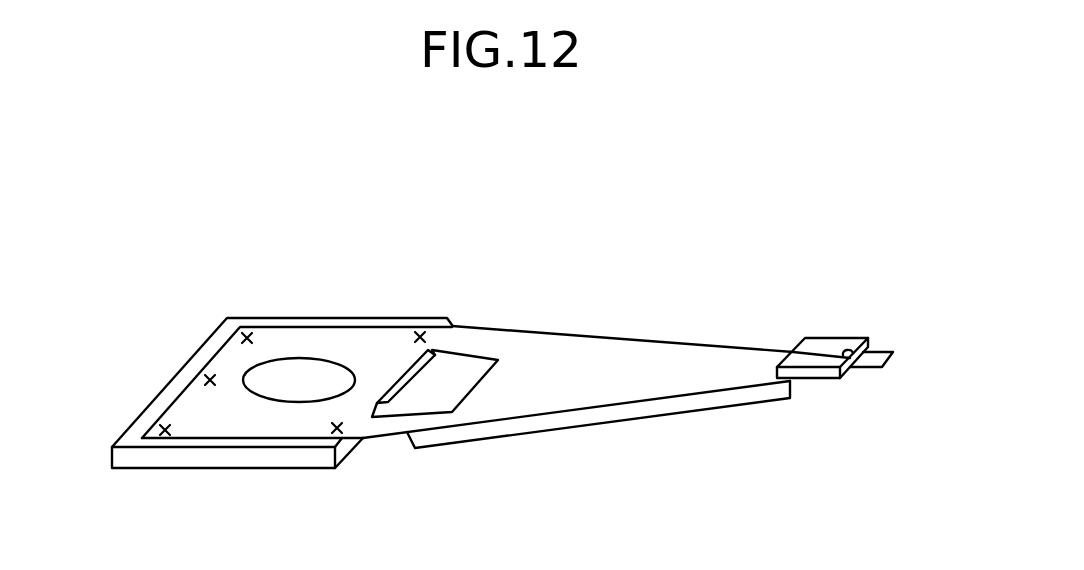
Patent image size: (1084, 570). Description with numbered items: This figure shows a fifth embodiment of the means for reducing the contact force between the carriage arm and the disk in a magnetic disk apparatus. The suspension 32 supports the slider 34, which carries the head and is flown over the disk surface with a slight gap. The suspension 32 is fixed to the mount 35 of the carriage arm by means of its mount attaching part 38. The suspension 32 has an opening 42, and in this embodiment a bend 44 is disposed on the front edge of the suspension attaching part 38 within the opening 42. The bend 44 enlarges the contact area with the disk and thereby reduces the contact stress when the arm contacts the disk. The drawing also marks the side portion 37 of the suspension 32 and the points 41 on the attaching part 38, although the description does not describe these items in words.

The suspension 32 is at (580, 368).
The slider 34 is at (828, 337).
The mount 35 is at (318, 317).
The side rail of load beam 37 is at (627, 418).
The mount attaching part 38 is at (258, 421).
The weld points 41 is at (421, 331).
The opening 42 is at (470, 366).
The bend 44 is at (407, 380).